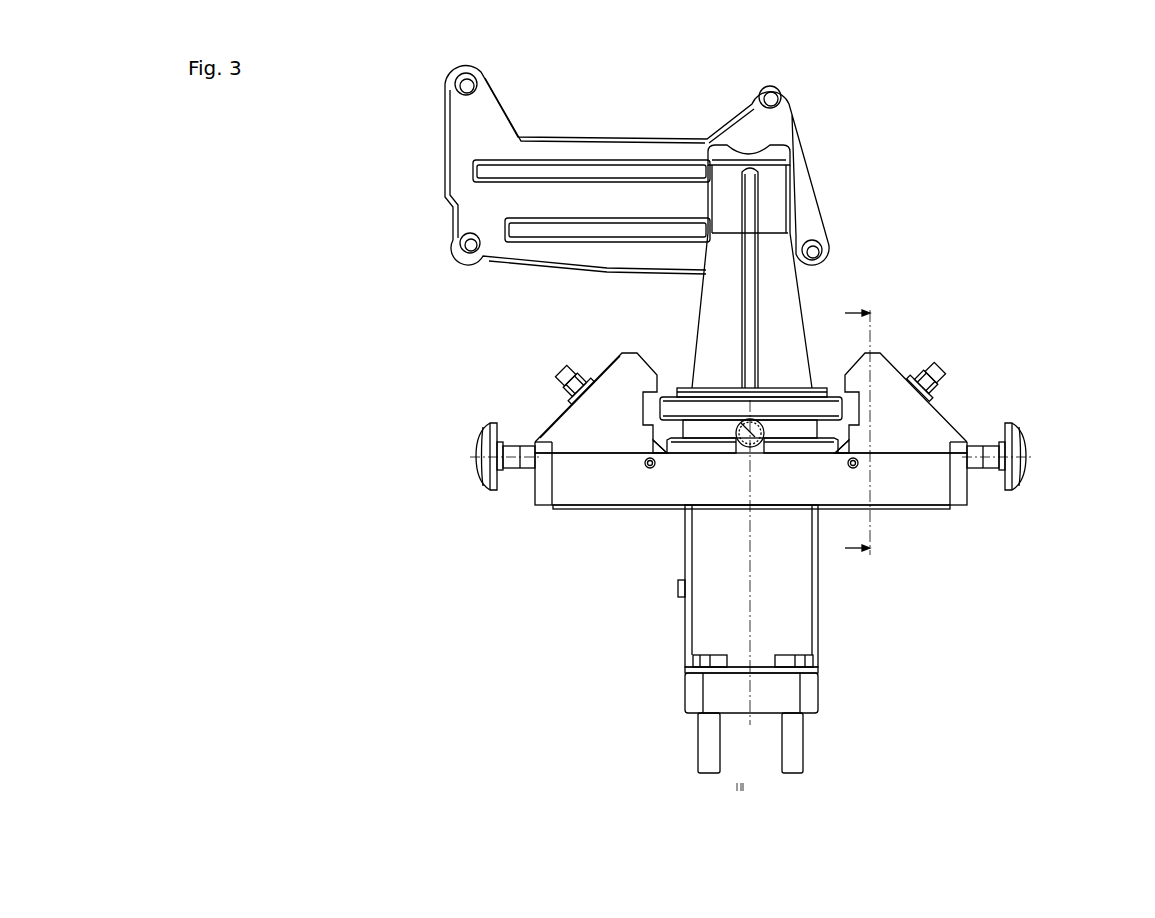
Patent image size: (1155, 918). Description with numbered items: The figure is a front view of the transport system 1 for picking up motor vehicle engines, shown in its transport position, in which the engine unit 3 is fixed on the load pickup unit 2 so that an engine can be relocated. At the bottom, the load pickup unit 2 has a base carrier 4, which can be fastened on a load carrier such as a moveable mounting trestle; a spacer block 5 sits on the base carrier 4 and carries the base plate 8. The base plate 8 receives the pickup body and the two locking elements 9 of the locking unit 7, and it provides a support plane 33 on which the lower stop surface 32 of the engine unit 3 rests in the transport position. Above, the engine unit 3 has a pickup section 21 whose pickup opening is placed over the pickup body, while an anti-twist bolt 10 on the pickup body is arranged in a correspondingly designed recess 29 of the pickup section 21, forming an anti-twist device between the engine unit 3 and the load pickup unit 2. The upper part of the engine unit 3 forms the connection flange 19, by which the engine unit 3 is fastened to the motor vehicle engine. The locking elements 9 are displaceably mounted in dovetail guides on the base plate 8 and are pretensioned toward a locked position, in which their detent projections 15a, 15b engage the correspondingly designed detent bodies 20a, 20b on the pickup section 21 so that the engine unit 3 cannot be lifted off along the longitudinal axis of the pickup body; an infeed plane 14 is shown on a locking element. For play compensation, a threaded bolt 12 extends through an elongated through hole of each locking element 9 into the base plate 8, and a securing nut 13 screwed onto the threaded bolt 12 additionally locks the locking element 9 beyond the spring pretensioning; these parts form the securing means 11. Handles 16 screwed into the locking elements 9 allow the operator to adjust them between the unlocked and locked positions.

The transport system 1 is at (978, 164).
The load pickup unit 2 is at (972, 600).
The engine unit 3 is at (364, 289).
The base carrier 4 is at (723, 697).
The spacer block 5 is at (730, 607).
The locking unit 7 is at (1069, 315).
The base plate 8 is at (597, 490).
The locking elements 9 is at (572, 427).
The anti-twist device (bolt) 10 is at (753, 434).
The securing means 11 is at (986, 316).
The threaded bolt 12 is at (945, 362).
The securing nut 13 is at (920, 377).
The infeed plane 14 is at (640, 377).
The detent projection 15a is at (633, 363).
The detent projection 15b is at (640, 425).
The handle 16 is at (1013, 452).
The connection flange 19 is at (537, 200).
The detent body 20a is at (667, 410).
The detent body 20b is at (683, 447).
The pickup section 21 is at (782, 302).
The recess 29 is at (745, 435).
The stop surface 32 is at (781, 453).
The support plane 33 is at (803, 447).